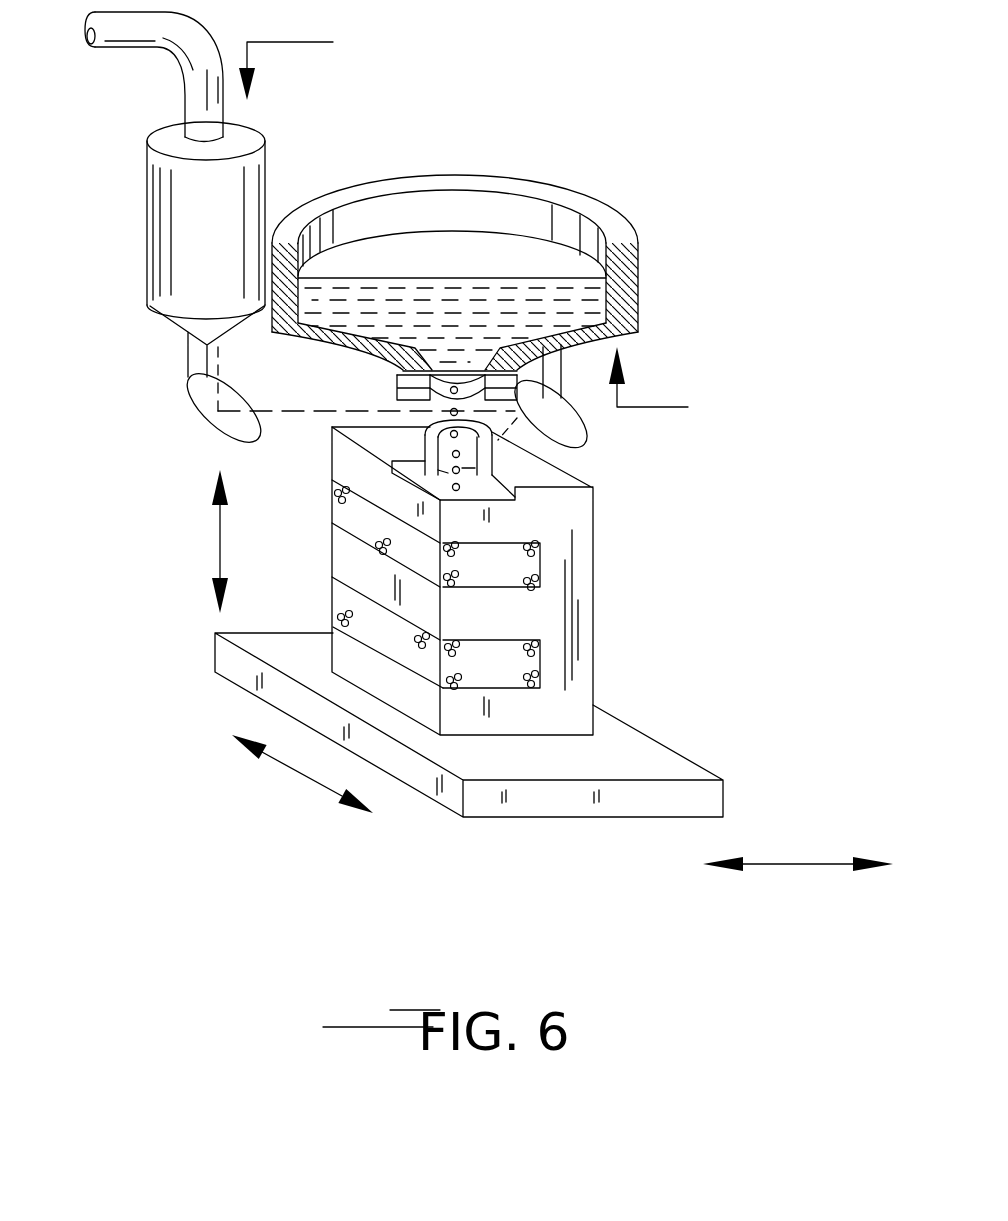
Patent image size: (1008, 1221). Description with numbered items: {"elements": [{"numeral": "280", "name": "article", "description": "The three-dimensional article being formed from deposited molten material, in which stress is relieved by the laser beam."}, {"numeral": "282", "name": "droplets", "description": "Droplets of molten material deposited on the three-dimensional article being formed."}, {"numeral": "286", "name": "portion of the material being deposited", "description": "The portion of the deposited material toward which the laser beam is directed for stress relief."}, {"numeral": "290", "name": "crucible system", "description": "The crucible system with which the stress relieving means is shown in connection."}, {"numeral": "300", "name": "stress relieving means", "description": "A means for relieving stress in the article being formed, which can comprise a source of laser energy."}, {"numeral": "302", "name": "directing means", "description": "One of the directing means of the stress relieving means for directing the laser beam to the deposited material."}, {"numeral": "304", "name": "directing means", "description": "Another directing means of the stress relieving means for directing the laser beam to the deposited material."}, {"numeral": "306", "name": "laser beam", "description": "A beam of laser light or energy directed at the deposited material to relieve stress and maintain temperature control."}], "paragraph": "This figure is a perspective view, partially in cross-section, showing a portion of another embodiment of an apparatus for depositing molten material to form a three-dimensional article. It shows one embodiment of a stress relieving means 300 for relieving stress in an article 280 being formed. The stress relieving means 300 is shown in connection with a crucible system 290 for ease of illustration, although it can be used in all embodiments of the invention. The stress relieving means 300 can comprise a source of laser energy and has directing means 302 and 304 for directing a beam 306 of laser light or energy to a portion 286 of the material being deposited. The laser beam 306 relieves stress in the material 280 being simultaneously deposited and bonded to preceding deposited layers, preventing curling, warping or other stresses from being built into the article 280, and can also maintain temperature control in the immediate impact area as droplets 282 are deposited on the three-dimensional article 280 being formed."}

The three-dimensional article being built 280 is at (316, 579).
The deposited layer 282 is at (327, 422).
The support bracket 286 is at (497, 452).
The molten material reservoir 290 is at (467, 166).
The supply hopper 300 is at (136, 231).
The left roller 302 is at (190, 398).
The right roller 304 is at (587, 433).
The deposition plane 306 is at (284, 411).